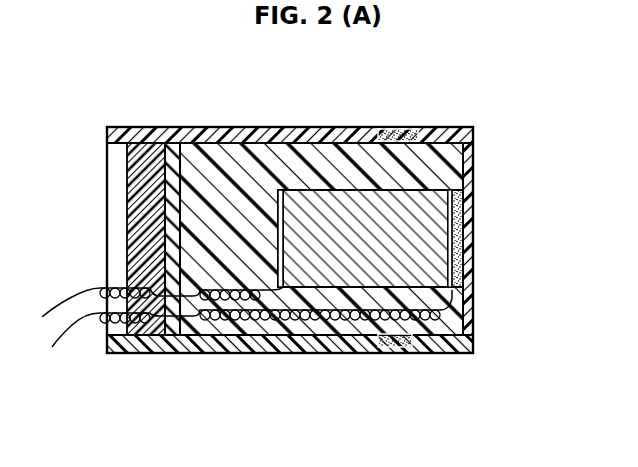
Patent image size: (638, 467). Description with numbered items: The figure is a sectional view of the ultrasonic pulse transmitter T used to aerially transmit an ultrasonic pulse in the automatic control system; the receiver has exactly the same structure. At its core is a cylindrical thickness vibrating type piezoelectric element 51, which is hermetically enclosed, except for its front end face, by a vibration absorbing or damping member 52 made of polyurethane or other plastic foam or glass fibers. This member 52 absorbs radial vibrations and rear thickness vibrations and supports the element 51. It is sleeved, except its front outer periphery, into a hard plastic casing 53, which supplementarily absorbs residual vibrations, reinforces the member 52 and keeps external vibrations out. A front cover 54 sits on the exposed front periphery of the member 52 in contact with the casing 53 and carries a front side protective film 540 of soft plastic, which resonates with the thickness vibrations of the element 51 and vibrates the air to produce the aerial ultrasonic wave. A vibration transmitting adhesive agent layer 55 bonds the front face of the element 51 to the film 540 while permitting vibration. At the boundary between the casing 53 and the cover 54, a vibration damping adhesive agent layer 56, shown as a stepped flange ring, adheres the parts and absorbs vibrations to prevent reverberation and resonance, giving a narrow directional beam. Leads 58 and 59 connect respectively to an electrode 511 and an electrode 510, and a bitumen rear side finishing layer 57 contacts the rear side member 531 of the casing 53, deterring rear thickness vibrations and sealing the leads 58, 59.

The thickness vibrating type piezoelectric element 51 is at (347, 282).
The electrode 511 is at (279, 206).
The vibration absorbing or damping member 52 is at (245, 334).
The casing 53 is at (272, 345).
The rear side member of the casing 531 is at (170, 172).
The front cover 54 is at (453, 126).
The front side protective film 540 is at (470, 308).
The electrode 510 is at (475, 202).
The vibration transmitting adhesive agent layer 55 is at (460, 237).
The vibration damping adhesive agent layer 56 is at (413, 126).
The rear side finishing layer 57 is at (127, 203).
The lead 58 is at (58, 305).
The lead 59 is at (70, 330).
The ultrasonic pulse transmitter T is at (170, 357).